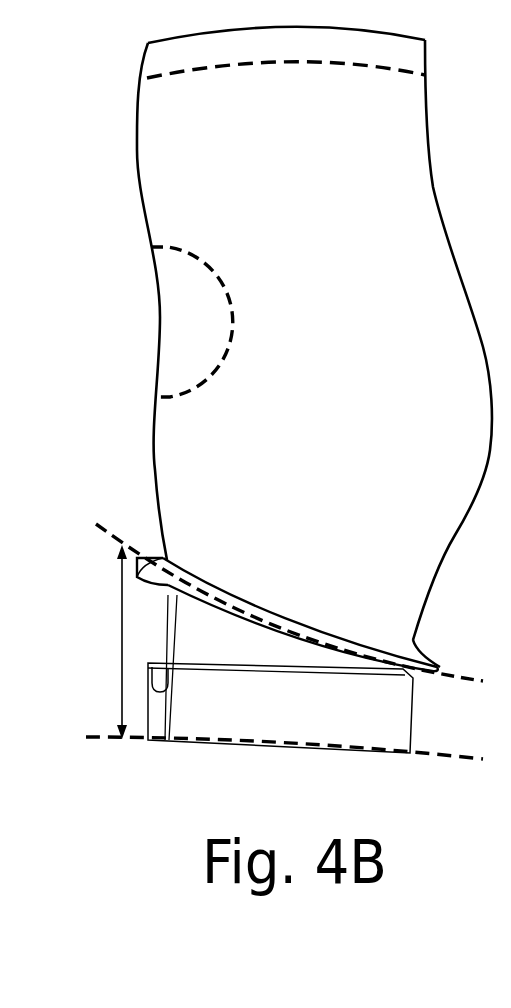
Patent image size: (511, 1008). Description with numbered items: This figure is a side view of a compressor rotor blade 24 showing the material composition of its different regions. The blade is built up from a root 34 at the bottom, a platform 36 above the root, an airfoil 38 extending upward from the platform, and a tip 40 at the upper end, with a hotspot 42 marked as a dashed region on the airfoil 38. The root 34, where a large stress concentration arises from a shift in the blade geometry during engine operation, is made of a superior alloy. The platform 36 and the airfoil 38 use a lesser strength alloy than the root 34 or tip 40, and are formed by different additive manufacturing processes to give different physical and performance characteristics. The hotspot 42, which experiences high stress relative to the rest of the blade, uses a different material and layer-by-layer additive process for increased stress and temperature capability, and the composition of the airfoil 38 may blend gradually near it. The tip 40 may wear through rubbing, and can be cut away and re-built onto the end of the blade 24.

The compressor rotor blade 24 is at (157, 470).
The root 34 is at (415, 693).
The platform 36 is at (427, 652).
The airfoil 38 is at (435, 190).
The tip 40 is at (139, 43).
The hotspot 42 is at (187, 247).